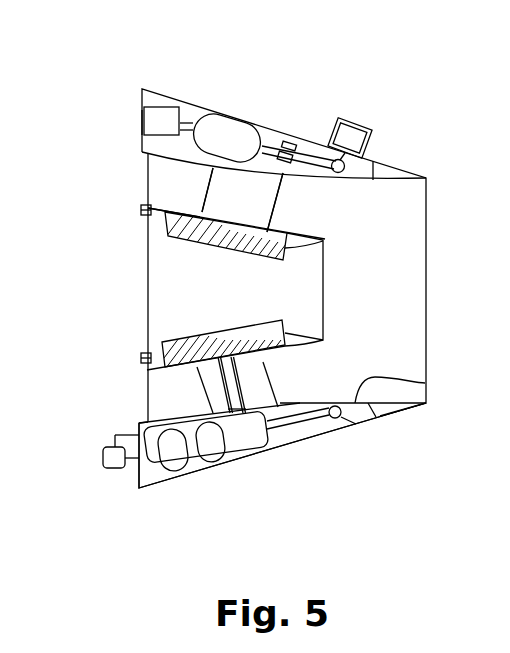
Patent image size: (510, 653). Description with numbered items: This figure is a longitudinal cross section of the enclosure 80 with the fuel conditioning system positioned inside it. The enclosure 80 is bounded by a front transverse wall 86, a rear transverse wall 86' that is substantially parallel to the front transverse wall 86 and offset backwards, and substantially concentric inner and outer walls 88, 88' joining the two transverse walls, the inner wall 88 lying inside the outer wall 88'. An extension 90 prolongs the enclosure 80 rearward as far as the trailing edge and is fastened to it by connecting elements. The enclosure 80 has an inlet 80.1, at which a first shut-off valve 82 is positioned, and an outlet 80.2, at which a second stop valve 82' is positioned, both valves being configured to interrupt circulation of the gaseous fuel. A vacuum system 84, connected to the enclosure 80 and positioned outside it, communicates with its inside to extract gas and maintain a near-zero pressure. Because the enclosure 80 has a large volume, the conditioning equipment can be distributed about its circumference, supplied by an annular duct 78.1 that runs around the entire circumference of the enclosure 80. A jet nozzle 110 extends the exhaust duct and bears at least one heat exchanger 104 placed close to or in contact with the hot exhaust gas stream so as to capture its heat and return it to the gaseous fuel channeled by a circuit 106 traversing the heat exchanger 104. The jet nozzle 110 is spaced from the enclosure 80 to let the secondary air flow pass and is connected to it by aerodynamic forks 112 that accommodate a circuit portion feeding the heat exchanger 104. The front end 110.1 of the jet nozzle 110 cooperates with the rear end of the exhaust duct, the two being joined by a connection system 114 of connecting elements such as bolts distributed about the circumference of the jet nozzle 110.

The annular duct 78.1 is at (335, 418).
The enclosure 80 is at (135, 493).
The inlet 80.1 is at (358, 161).
The outlet 80.2 is at (142, 118).
The first shut-off valve 82 is at (350, 105).
The second stop valve 82' is at (170, 83).
The vacuum system 84 is at (113, 433).
The front transverse wall 86 is at (149, 456).
The rear transverse wall 86' is at (433, 330).
The inner wall 88 is at (412, 388).
The outer wall 88' is at (239, 104).
The extension 90 is at (407, 411).
The heat exchanger 104 is at (202, 228).
The circuit 106 is at (300, 352).
The jet nozzle 110 is at (164, 204).
The front end 110.1 is at (166, 212).
The fork 112 is at (217, 178).
The connection system 114 is at (141, 208).